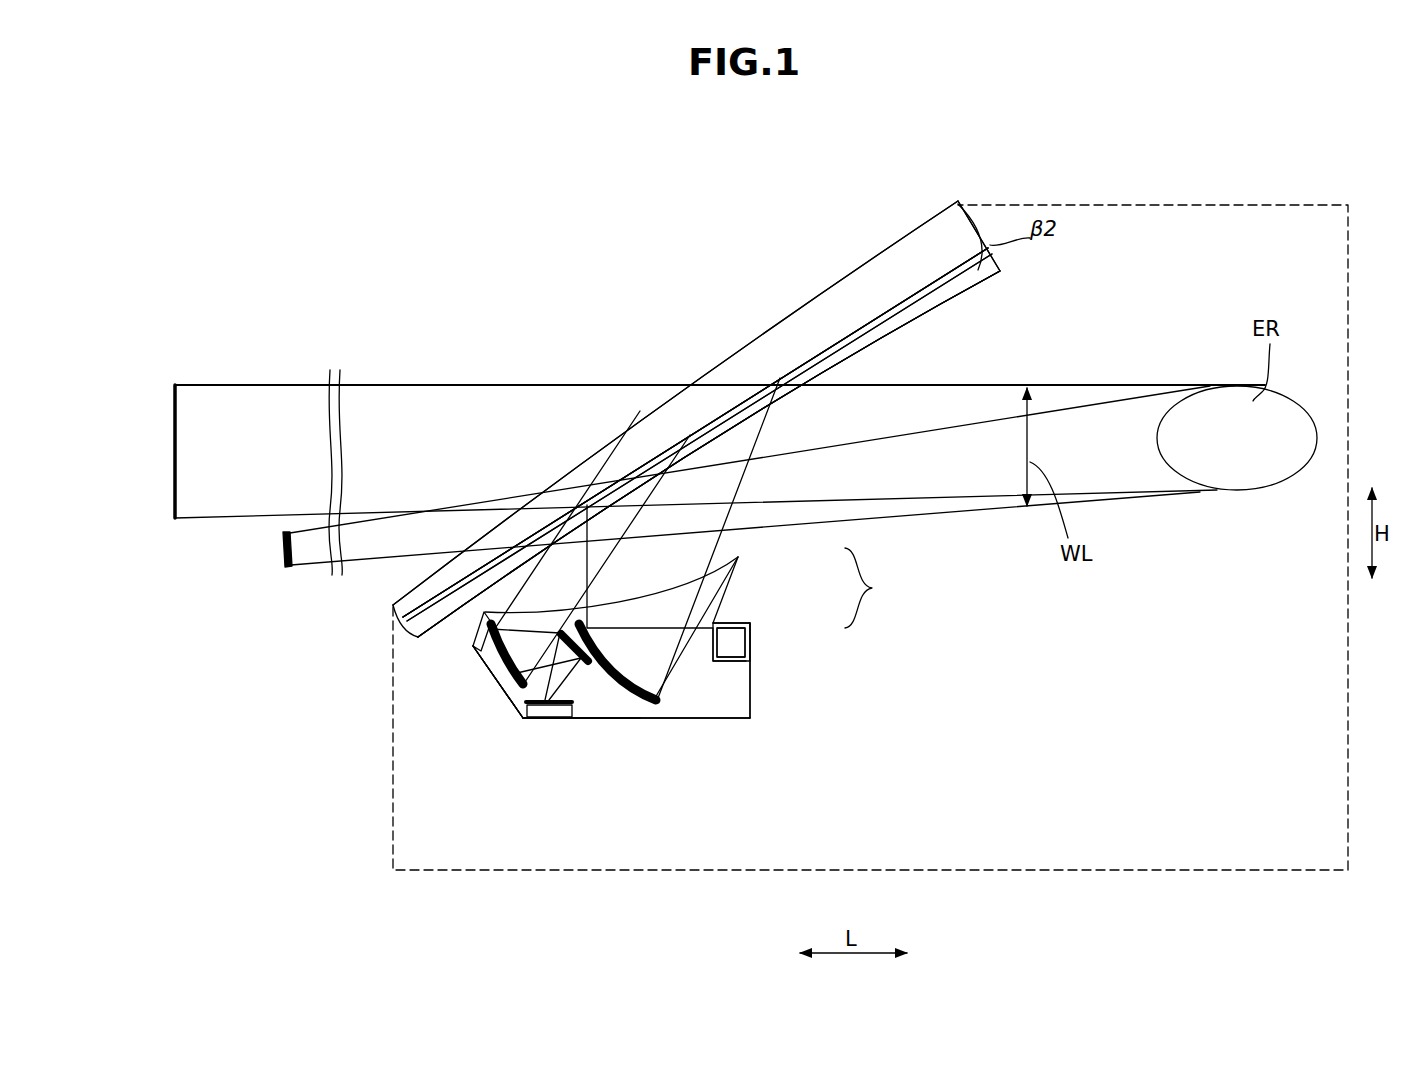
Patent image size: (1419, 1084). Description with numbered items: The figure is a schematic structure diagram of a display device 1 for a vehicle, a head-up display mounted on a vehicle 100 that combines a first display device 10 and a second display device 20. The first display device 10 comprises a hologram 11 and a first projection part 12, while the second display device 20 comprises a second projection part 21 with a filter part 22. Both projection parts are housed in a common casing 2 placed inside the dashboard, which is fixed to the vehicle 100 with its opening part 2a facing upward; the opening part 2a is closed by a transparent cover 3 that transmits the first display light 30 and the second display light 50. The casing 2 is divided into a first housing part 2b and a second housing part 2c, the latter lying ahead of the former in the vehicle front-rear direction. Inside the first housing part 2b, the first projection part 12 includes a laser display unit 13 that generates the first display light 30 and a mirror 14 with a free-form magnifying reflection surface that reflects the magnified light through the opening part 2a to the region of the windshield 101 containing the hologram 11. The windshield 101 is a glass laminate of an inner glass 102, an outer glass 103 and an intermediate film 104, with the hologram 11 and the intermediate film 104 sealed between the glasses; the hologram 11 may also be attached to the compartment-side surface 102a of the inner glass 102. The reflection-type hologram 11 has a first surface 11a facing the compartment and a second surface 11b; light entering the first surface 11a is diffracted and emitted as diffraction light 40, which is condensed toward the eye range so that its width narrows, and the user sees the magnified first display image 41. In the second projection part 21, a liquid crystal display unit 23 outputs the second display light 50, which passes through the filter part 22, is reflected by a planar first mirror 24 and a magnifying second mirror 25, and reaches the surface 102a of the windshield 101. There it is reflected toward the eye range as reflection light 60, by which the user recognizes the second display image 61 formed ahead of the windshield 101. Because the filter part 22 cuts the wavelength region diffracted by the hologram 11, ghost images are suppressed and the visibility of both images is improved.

The display device for a vehicle 1 is at (549, 146).
The casing 2 is at (752, 700).
The opening part 2a is at (474, 648).
The first housing part 2b is at (691, 700).
The second housing part 2c is at (580, 720).
The cover 3 is at (484, 614).
The first display device 10 is at (875, 588).
The hologram 11 is at (725, 423).
The first surface 11a is at (752, 402).
The second surface 11b is at (703, 456).
The first projection part 12 is at (758, 637).
The laser display unit 13 is at (735, 647).
The mirror 14 is at (633, 693).
The second display device 20 is at (522, 722).
The second projection part 21 is at (491, 665).
The filter part 22 is at (494, 692).
The liquid crystal display unit 23 is at (543, 718).
The first mirror 24 is at (583, 660).
The second mirror 25 is at (495, 684).
The first display light 30 is at (722, 542).
The diffraction light 40 is at (1006, 381).
The first display image 41 is at (172, 452).
The second display light 50 is at (514, 583).
The reflection light 60 is at (968, 514).
The second display image 61 is at (283, 550).
The vehicle 100 is at (1186, 203).
The windshield 101 is at (906, 217).
The inner glass 102 is at (952, 286).
The surface of the inner glass 102a is at (690, 430).
The outer glass 103 is at (862, 285).
The intermediate film 104 is at (922, 288).